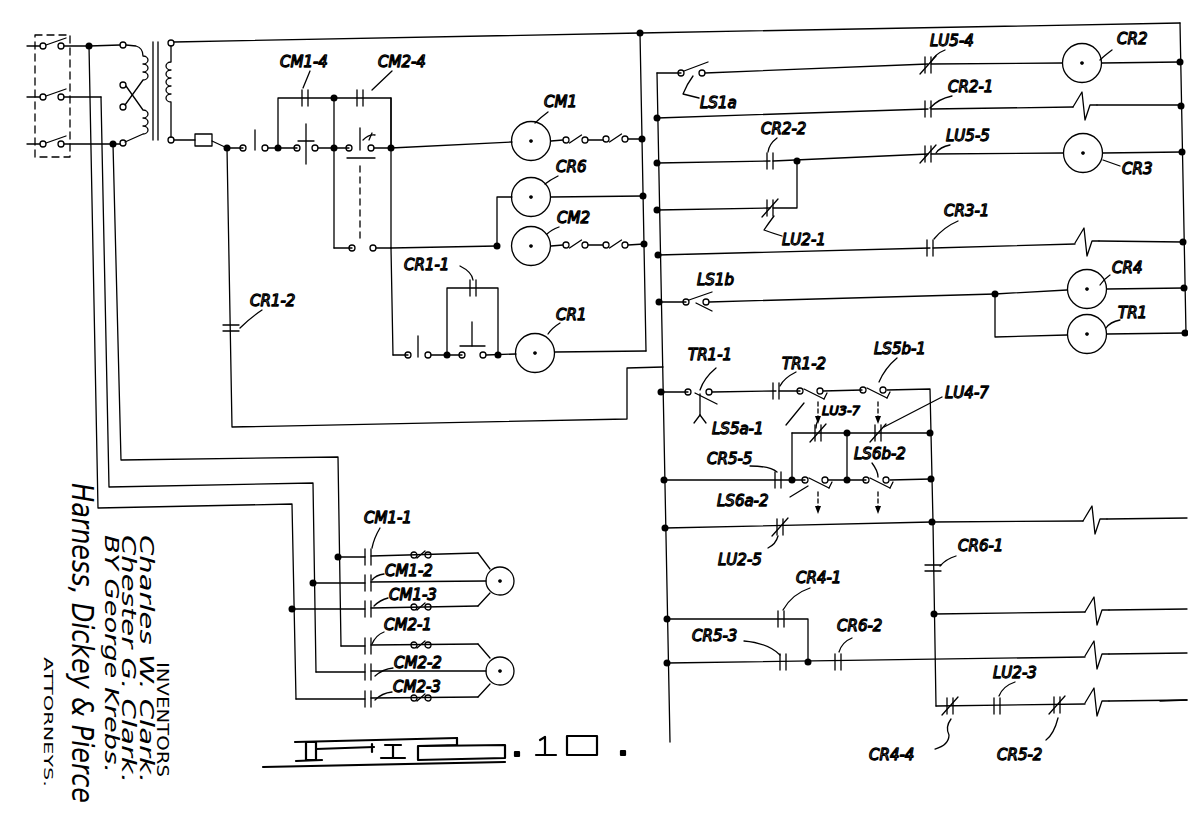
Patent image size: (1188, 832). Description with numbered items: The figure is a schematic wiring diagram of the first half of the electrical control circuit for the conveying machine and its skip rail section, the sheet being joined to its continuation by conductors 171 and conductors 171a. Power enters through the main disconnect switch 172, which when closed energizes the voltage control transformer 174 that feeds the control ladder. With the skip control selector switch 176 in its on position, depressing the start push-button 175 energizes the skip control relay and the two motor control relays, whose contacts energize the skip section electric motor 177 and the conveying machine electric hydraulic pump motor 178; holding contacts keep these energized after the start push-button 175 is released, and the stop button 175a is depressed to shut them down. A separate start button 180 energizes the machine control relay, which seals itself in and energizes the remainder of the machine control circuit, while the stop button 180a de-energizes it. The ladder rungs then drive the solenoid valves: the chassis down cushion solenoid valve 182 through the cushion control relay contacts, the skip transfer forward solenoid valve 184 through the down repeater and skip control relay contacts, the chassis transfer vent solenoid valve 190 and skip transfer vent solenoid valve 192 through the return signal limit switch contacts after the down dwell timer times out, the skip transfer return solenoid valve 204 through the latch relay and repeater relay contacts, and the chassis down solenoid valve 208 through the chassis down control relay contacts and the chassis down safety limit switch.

The conductors 171 is at (671, 724).
The conductors 171a is at (1185, 735).
The main disconnect switch 172 is at (47, 162).
The voltage control transformer 174 is at (139, 114).
The start push-button 175 is at (299, 159).
The stop button 175a is at (240, 123).
The skip control selector switch 176 is at (378, 128).
The electric motor 177 is at (514, 661).
The electric hydraulic pump motor 178 is at (512, 569).
The start button 180 is at (487, 359).
The stop button 180a is at (408, 371).
The chassis down cushion solenoid valve 182 is at (1092, 234).
The skip transfer forward solenoid valve 184 is at (1099, 644).
The chassis transfer vent solenoid valve 190 is at (1096, 503).
The skip transfer vent solenoid valve 192 is at (1100, 604).
The skip transfer return solenoid valve 204 is at (1099, 694).
The chassis down solenoid valve 208 is at (1094, 106).